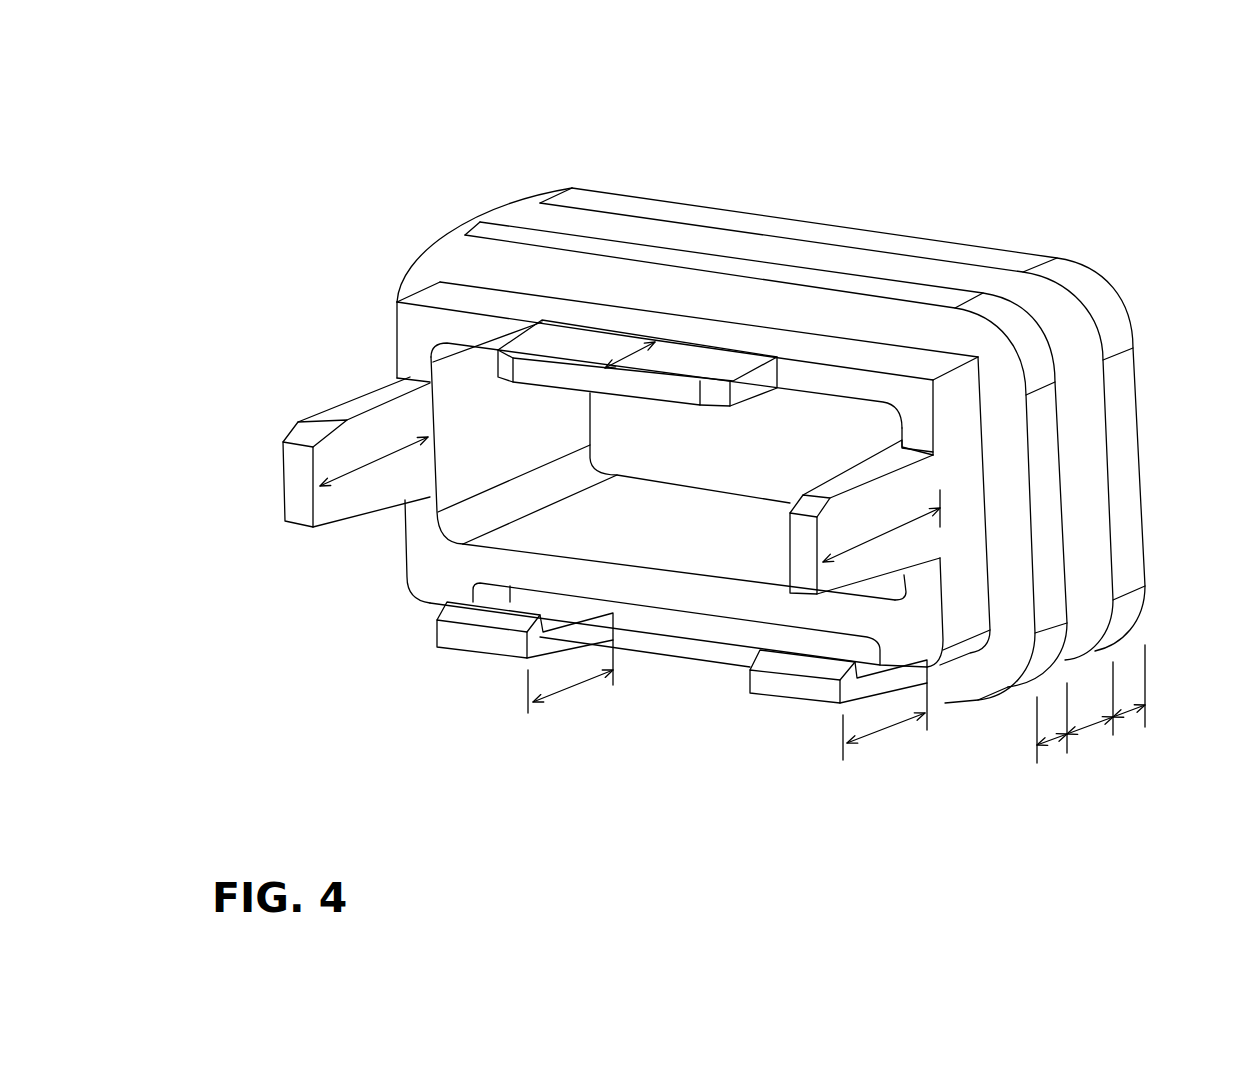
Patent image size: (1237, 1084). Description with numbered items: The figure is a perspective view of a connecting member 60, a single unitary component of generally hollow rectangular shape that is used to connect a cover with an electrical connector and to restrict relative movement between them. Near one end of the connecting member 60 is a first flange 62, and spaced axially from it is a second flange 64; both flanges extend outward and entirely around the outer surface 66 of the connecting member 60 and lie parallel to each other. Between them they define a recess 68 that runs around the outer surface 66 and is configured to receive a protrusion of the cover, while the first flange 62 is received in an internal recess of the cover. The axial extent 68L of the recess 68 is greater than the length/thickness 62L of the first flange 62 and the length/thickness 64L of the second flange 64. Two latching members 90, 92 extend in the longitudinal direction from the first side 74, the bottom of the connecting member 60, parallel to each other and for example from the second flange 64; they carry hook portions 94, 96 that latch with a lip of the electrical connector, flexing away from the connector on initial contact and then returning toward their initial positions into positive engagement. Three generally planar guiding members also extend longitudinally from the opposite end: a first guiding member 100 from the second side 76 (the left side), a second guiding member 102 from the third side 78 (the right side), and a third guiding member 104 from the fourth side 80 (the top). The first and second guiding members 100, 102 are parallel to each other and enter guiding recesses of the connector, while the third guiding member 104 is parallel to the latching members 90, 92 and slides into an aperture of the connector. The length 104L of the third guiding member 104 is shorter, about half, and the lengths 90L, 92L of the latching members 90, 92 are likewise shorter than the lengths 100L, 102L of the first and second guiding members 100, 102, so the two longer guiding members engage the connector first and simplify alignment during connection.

The connecting member 60 is at (1094, 194).
The first flange 62 is at (1102, 305).
The length/thickness of first flange 62L is at (1130, 733).
The second flange 64 is at (902, 293).
The length/thickness of second flange 64L is at (1042, 740).
The outer surface 66 is at (440, 295).
The recess 68 is at (1025, 288).
The axial extent of recess 68L is at (1102, 733).
The first side 74 is at (678, 658).
The second side 76 is at (423, 507).
The third side 78 is at (930, 587).
The fourth side 80 is at (810, 377).
The latching member 90 is at (550, 643).
The length of latching member 90L is at (572, 690).
The latching member 92 is at (850, 690).
The length of latching member 92L is at (877, 736).
The hook portion 94 is at (483, 622).
The hook portion 96 is at (808, 668).
The first guiding member 100 is at (372, 460).
The length of first guiding member 100L is at (345, 420).
The second guiding member 102 is at (900, 492).
The length of second guiding member 102L is at (880, 563).
The third guiding member 104 is at (570, 345).
The length of third guiding member 104L is at (628, 353).